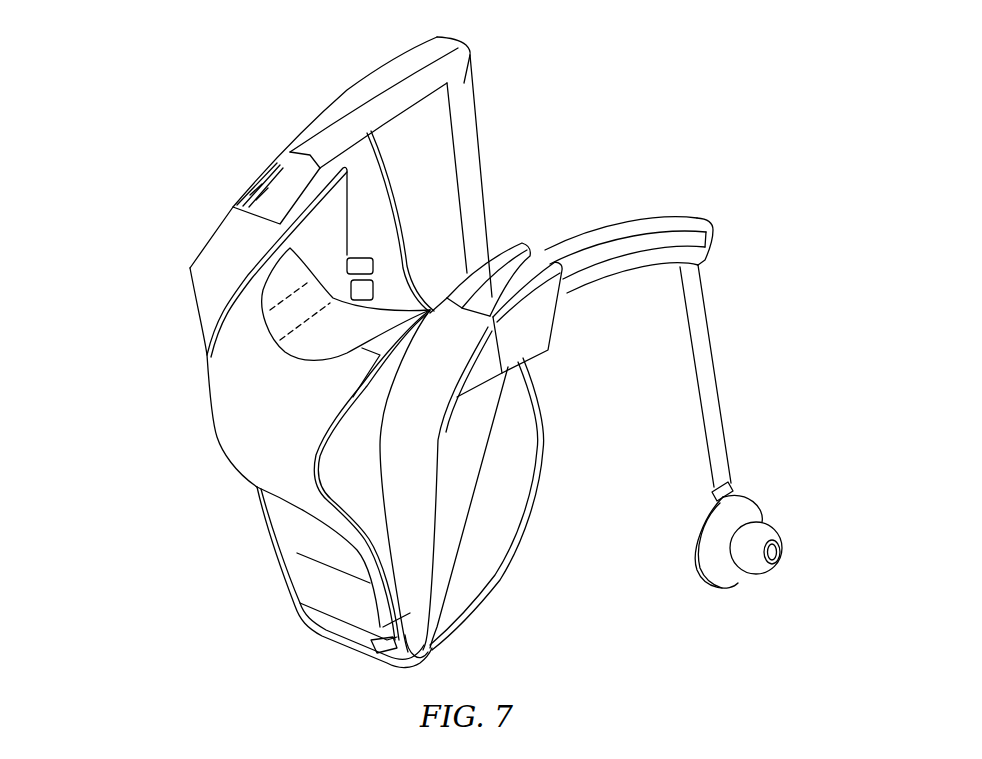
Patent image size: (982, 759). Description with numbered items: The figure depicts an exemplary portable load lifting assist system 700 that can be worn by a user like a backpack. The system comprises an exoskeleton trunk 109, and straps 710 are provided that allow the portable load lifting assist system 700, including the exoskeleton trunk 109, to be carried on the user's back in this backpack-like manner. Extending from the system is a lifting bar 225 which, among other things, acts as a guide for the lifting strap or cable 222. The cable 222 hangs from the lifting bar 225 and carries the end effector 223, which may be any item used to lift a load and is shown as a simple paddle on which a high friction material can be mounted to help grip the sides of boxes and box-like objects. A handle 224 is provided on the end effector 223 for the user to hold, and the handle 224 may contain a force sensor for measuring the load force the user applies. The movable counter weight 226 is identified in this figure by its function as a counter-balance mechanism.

The portable load lifting assist system 700 is at (167, 242).
The straps 710 is at (393, 183).
The lifting bar 225 is at (667, 208).
The cable 222 is at (718, 375).
The handle 224 is at (773, 533).
The end effector 223 is at (707, 549).
The movable counter weight 226 is at (243, 467).
The exoskeleton trunk 109 is at (378, 638).